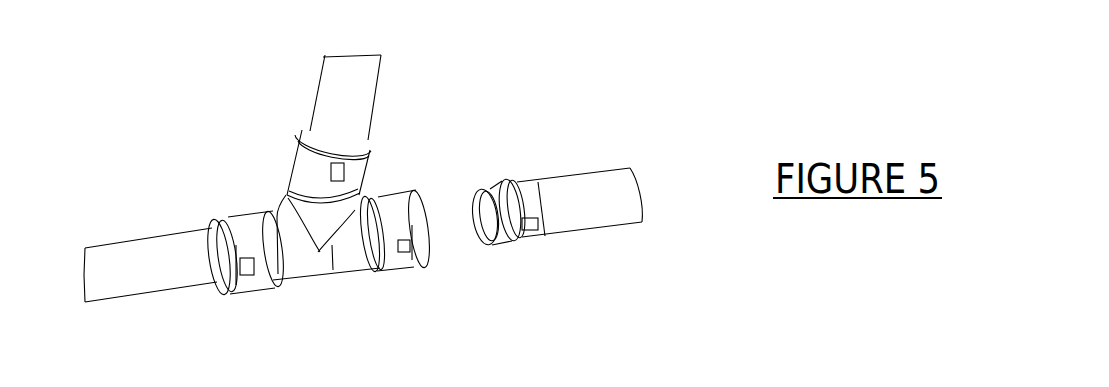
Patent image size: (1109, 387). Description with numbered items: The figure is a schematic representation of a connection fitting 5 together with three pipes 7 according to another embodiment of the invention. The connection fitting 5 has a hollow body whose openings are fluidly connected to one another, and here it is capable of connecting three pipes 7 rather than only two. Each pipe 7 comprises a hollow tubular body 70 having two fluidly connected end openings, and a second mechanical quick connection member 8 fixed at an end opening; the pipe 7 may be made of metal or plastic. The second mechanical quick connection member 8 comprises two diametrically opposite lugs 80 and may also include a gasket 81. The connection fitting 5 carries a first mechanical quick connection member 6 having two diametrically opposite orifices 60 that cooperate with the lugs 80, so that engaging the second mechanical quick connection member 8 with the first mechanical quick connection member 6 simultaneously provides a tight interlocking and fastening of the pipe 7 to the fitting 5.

The connection fitting 5 is at (348, 295).
The first mechanical quick connection member 6 is at (193, 207).
The pipe 7 is at (128, 204).
The second mechanical quick connection member 8 is at (477, 161).
The orifice 60 is at (413, 240).
The hollow tubular body 70 is at (140, 285).
The lug 80 is at (535, 224).
The gasket 81 is at (513, 237).